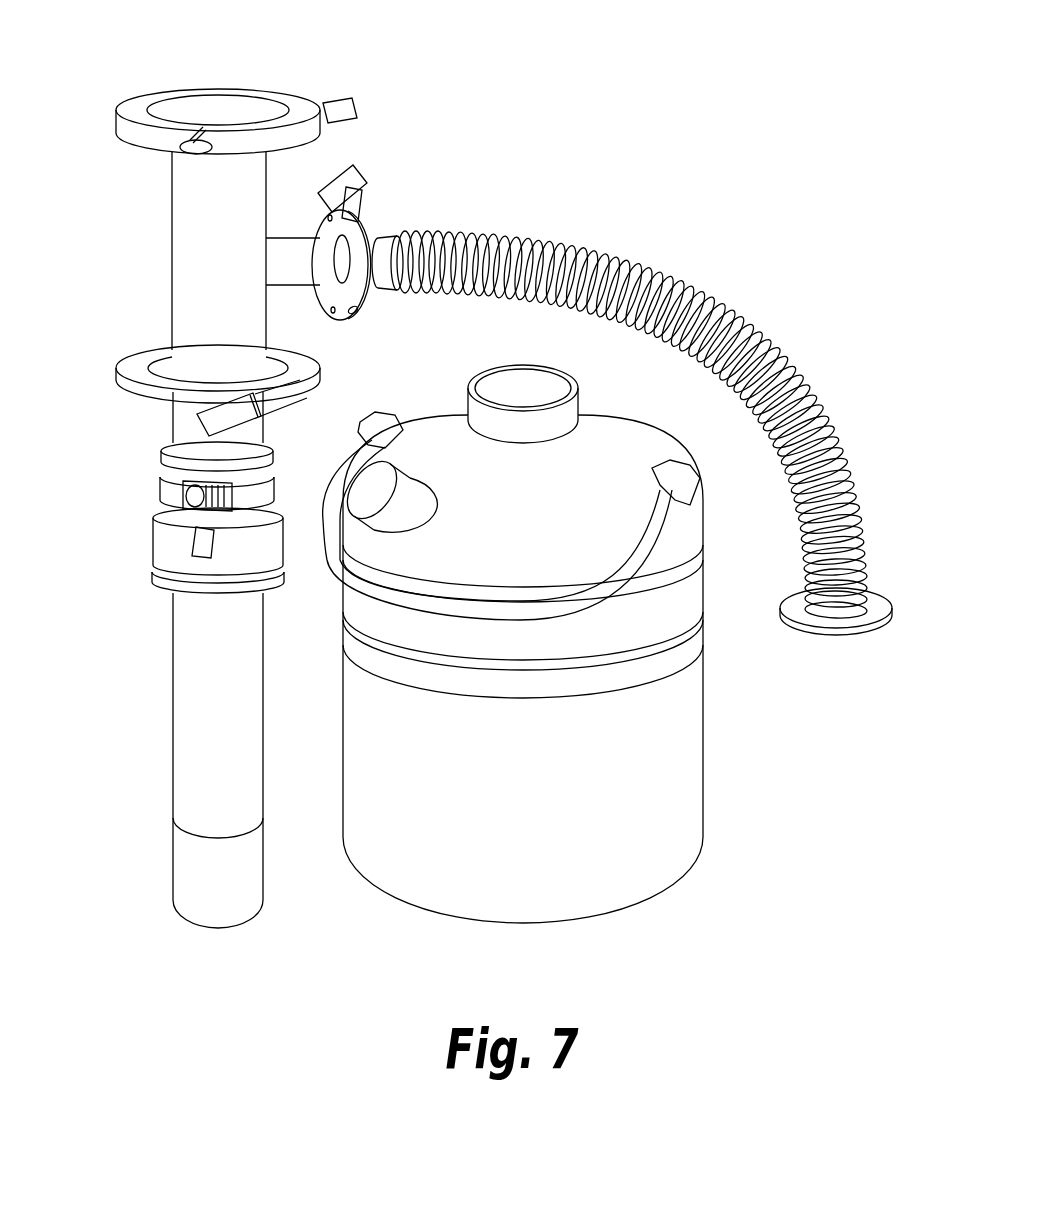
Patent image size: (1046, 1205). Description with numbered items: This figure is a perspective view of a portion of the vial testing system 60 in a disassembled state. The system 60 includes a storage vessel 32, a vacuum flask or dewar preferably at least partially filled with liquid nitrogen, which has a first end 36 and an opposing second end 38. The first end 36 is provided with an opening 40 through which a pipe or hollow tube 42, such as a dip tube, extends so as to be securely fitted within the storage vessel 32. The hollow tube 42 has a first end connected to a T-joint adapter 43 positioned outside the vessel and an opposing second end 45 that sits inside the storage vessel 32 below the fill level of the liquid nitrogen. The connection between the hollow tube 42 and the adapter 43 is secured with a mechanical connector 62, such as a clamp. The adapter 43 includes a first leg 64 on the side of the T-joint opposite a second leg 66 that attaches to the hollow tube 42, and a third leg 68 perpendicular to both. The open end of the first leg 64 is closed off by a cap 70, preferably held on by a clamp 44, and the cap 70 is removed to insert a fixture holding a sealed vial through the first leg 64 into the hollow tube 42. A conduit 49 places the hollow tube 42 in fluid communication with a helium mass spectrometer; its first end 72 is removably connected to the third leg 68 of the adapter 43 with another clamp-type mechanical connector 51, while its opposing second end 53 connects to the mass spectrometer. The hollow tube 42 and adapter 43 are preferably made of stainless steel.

The storage vessel 32 is at (515, 771).
The first end 36 is at (619, 453).
The second end 38 is at (697, 852).
The opening 40 is at (525, 387).
The hollow tube 42 is at (180, 708).
The adapter 43 is at (183, 265).
The clamp 44 is at (128, 133).
The second end 45 is at (195, 892).
The conduit 49 is at (658, 278).
The hose clamp 51 is at (372, 228).
The mechanical connector 53 is at (882, 602).
The system 60 is at (580, 157).
The mechanical connector 62 is at (128, 385).
The first leg 64 is at (183, 183).
The second leg 66 is at (185, 338).
The third leg 68 is at (300, 268).
The cap 70 is at (212, 115).
The first end 72 is at (381, 281).